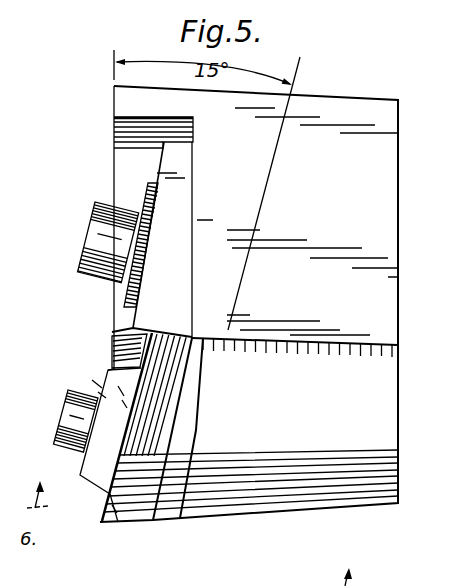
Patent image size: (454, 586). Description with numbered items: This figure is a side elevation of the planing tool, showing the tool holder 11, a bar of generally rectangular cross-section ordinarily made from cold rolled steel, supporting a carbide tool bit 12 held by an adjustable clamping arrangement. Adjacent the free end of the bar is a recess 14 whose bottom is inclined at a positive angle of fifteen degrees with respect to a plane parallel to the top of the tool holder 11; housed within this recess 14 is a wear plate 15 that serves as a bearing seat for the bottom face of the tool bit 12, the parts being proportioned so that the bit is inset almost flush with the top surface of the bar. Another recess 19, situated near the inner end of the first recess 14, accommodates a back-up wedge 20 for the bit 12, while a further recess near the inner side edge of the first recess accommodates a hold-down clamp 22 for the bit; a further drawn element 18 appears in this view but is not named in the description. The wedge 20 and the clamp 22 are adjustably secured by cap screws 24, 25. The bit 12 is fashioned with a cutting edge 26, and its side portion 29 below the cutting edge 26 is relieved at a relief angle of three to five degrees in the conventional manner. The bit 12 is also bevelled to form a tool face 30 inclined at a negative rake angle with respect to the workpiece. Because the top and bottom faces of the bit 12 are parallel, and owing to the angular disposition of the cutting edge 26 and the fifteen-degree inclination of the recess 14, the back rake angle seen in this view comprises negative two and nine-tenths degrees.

The tool holder 11 is at (398, 119).
The tool bit 12 is at (153, 388).
The recess 14 is at (207, 378).
The wear plate 15 is at (199, 408).
The shim block 18 is at (114, 136).
The recess 19 is at (174, 124).
The back-up wedge 20 is at (174, 164).
The hold-down clamp 22 is at (92, 466).
The cap screw 24 is at (105, 233).
The cap screw 25 is at (72, 408).
The cutting edge 26 is at (118, 524).
The side portion 29 is at (140, 508).
The tool face 30 is at (118, 512).